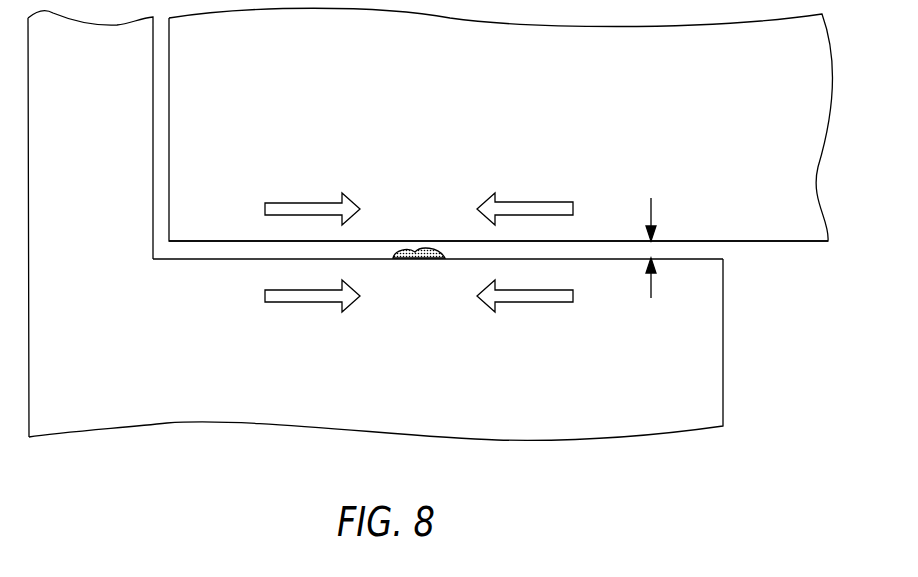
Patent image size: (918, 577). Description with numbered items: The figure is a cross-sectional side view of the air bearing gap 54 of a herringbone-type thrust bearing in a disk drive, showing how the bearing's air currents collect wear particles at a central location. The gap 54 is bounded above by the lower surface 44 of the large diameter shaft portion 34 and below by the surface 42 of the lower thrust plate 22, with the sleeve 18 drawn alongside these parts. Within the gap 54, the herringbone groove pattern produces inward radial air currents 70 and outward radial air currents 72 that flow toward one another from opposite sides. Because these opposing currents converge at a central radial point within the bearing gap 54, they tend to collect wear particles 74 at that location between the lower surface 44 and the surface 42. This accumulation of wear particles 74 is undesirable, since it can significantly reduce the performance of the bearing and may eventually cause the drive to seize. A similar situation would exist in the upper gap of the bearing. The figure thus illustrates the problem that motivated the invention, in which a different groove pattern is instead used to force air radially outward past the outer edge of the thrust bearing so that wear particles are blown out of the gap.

The sleeve 18 is at (100, 100).
The lower thrust plate 22 is at (347, 400).
The large diameter shaft portion 34 is at (347, 85).
The surface of the lower thrust plate 42 is at (215, 262).
The lower surface of the large diameter shaft portion 44 is at (209, 241).
The gap 54 is at (651, 262).
The inward radial air currents 70 is at (303, 203).
The outward radial air currents 72 is at (523, 207).
The wear particles 74 is at (403, 259).